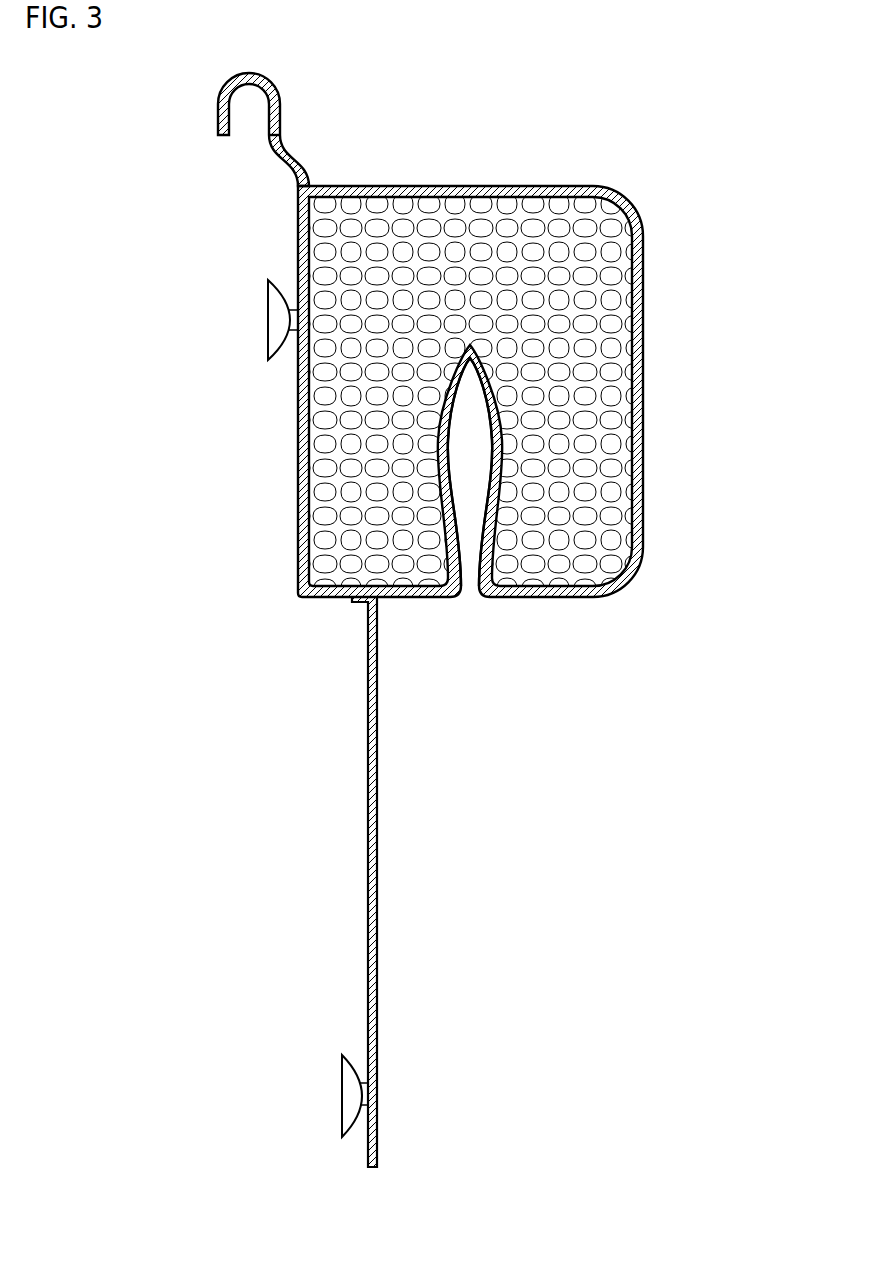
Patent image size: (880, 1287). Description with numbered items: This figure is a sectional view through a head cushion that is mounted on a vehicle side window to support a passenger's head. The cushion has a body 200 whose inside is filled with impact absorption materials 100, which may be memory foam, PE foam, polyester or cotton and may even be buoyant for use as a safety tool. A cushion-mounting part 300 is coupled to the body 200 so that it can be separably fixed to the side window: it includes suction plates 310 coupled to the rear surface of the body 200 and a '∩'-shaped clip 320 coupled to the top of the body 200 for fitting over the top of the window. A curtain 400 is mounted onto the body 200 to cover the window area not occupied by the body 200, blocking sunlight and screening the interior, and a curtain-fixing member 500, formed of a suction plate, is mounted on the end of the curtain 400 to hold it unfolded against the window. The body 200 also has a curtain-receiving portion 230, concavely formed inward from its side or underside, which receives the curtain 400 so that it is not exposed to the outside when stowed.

The impact absorption materials 100 is at (573, 233).
The body 200 is at (665, 432).
The curtain-receiving portion 230 is at (500, 515).
The cushion-mounting part 300 is at (173, 216).
The suction plates 310 is at (273, 320).
The clip 320 is at (216, 124).
The curtain 400 is at (399, 858).
The curtain-fixing member 500 is at (347, 1093).